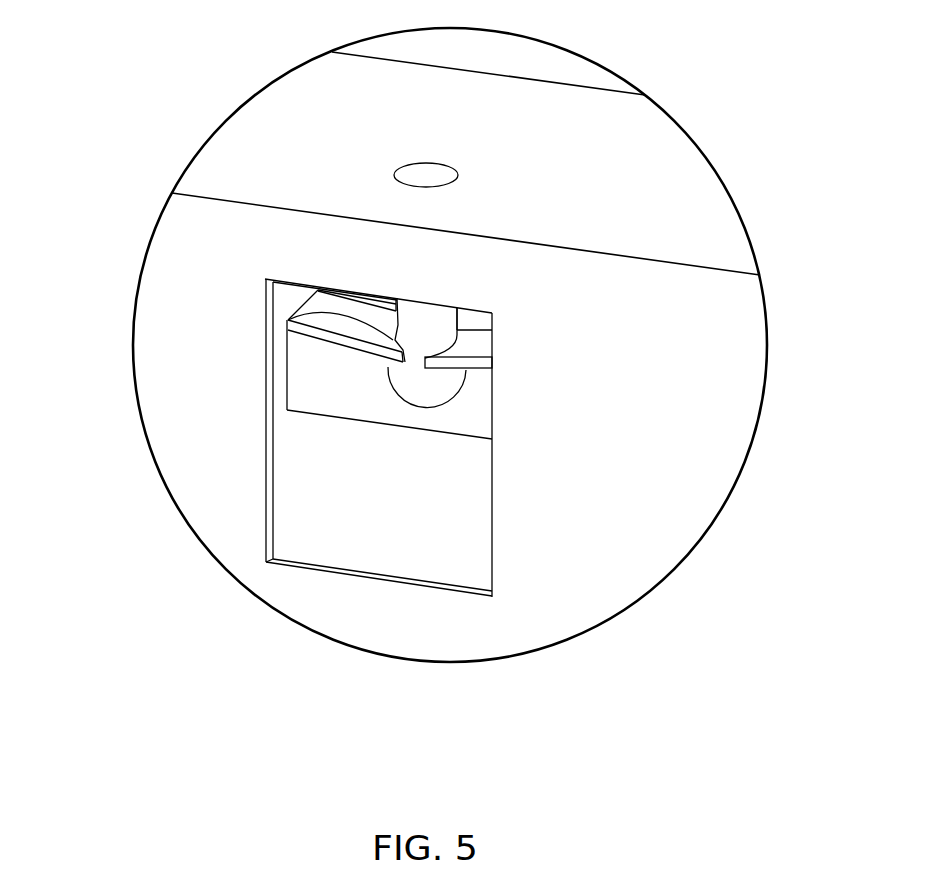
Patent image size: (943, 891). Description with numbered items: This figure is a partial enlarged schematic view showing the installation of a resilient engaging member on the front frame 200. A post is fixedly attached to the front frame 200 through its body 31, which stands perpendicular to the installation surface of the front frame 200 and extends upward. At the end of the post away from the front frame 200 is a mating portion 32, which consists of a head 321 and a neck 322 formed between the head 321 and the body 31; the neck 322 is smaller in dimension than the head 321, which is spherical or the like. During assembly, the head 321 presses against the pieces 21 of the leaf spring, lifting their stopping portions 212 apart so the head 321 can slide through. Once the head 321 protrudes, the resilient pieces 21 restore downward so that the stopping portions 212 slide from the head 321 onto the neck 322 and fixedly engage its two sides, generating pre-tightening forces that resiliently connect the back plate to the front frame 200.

The front frame 200 is at (288, 108).
The pieces 21 is at (322, 305).
The stopping portions 212 is at (288, 320).
The body 31 is at (427, 313).
The mating portion 32 is at (92, 512).
The head 321 is at (422, 389).
The neck 322 is at (458, 323).